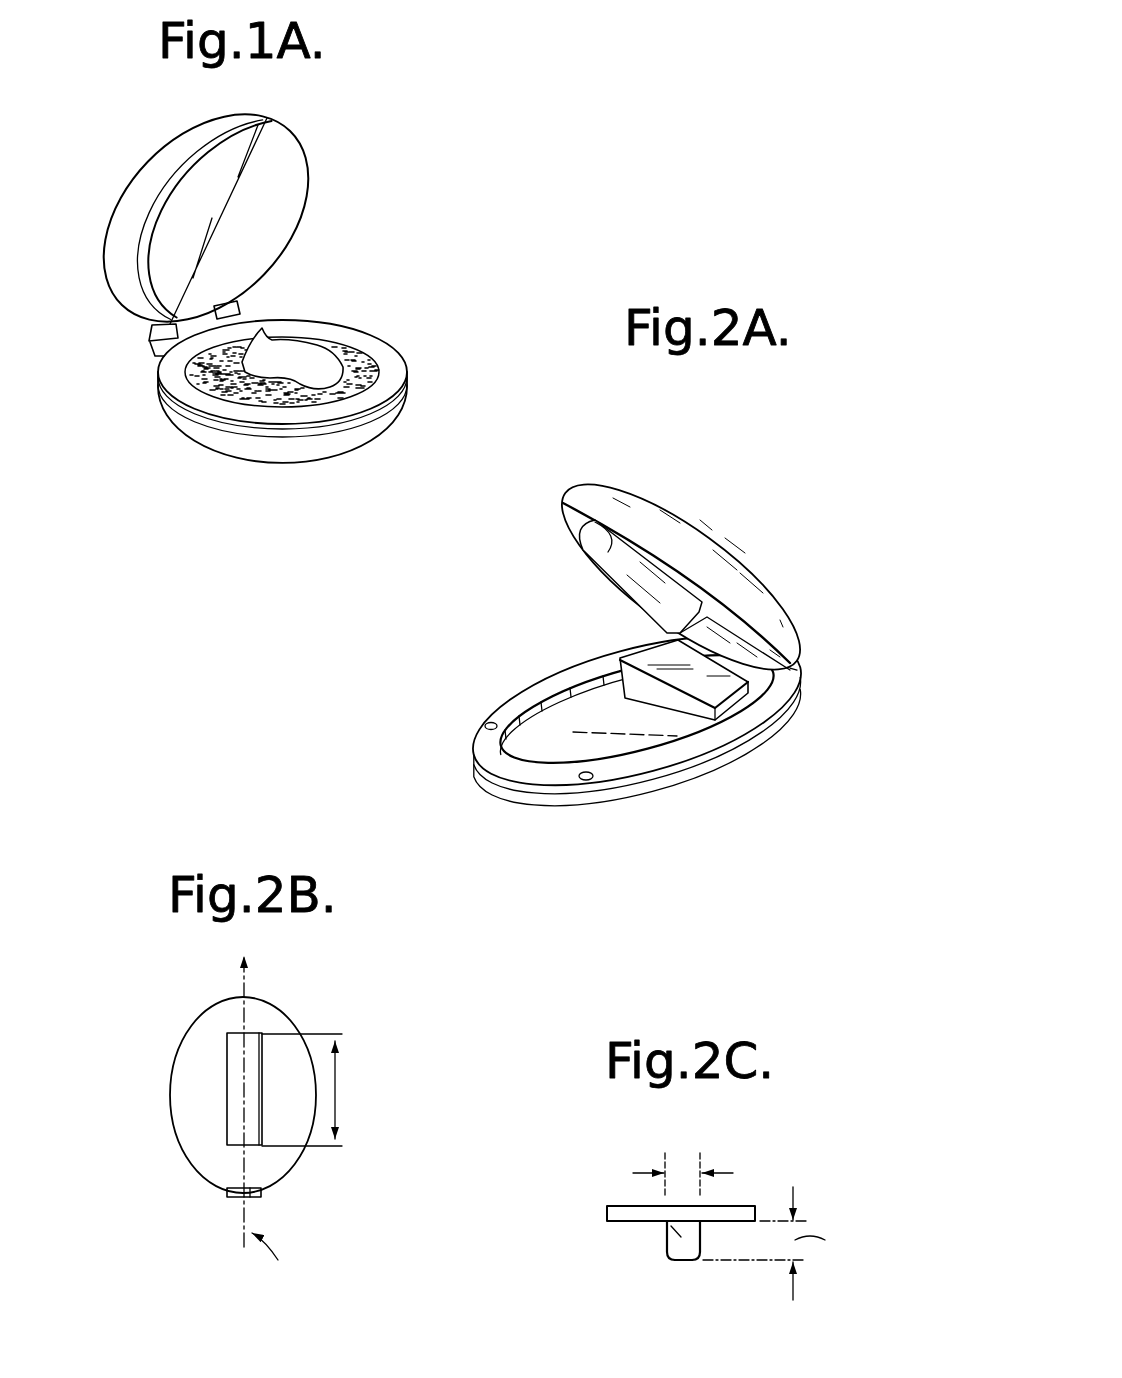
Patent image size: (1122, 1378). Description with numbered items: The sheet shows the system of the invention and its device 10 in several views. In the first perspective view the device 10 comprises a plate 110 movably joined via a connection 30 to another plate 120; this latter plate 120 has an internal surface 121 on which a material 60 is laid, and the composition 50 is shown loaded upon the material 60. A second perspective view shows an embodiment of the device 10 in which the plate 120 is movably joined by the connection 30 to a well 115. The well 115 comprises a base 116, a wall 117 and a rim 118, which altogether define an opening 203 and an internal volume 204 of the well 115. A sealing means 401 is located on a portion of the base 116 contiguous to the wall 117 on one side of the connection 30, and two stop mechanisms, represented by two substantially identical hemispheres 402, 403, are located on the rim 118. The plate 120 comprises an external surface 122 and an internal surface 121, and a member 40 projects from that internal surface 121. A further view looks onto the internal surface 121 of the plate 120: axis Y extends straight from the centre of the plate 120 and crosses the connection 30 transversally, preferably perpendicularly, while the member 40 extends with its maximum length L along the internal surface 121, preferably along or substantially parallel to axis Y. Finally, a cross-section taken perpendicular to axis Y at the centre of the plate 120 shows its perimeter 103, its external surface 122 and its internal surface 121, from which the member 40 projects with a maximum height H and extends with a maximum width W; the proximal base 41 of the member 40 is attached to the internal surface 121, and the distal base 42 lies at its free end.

In FIG. 1A, the device 10 is at (130, 158).
In FIG. 2A, the device 10 is at (807, 518).
In FIG. 1A, the plate 110 is at (322, 150).
In FIG. 1A, the plate 120 is at (413, 345).
In FIG. 2A, the plate 120 is at (613, 478).
In FIG. 2B, the plate 120 is at (197, 1190).
In FIG. 2C, the plate 120 is at (758, 1184).
In FIG. 1A, the internal surface 121 is at (402, 372).
In FIG. 2A, the internal surface 121 is at (570, 523).
In FIG. 2B, the internal surface 121 is at (270, 1025).
In FIG. 2A, the external surface 122 is at (690, 525).
In FIG. 2C, the external surface 122 is at (623, 1205).
In FIG. 1A, the connection 30 is at (132, 354).
In FIG. 2A, the connection 30 is at (800, 672).
In FIG. 2B, the connection 30 is at (250, 1197).
In FIG. 2A, the member 40 is at (612, 570).
In FIG. 2B, the member 40 is at (230, 1072).
In FIG. 2C, the proximal base 41 is at (670, 1236).
In FIG. 2C, the distal base 42 is at (677, 1272).
In FIG. 1A, the composition 50 is at (293, 358).
In FIG. 1A, the material 60 is at (345, 362).
In FIG. 2C, the perimeter 103 is at (597, 1215).
In FIG. 2A, the well 115 is at (597, 815).
In FIG. 2A, the base 116 is at (640, 740).
In FIG. 2A, the wall 117 is at (590, 693).
In FIG. 2A, the rim 118 is at (697, 743).
In FIG. 2A, the opening 203 is at (540, 715).
In FIG. 2A, the internal volume 204 is at (602, 740).
In FIG. 2A, the sealing means 401 is at (722, 689).
In FIG. 2A, the stop mechanism 402 is at (577, 776).
In FIG. 2A, the stop mechanism 403 is at (486, 725).